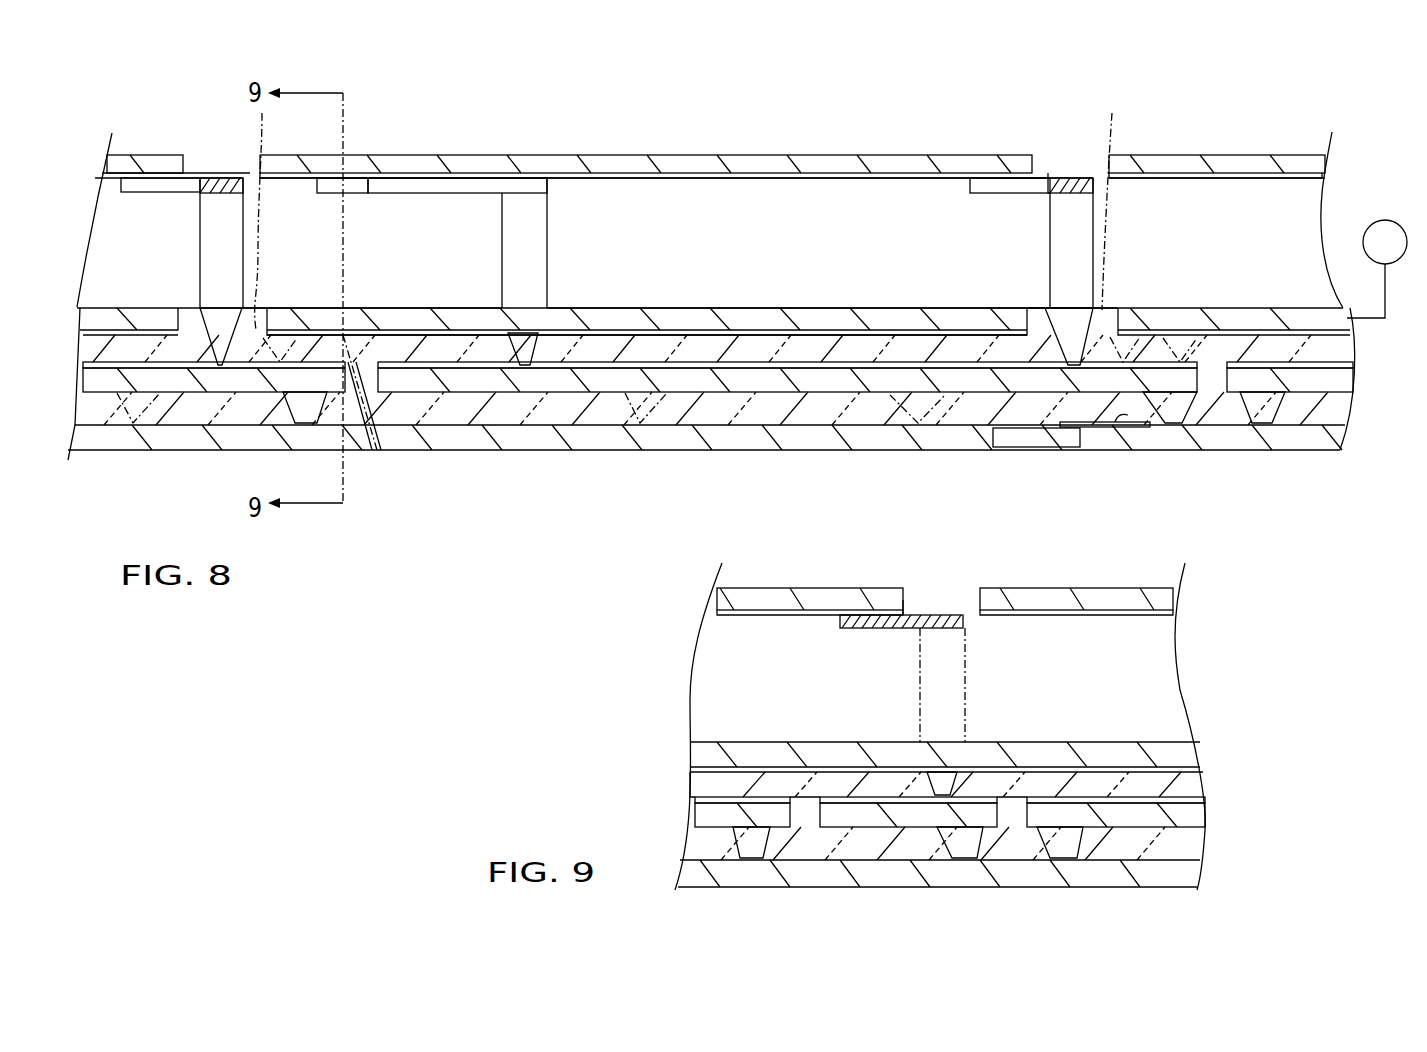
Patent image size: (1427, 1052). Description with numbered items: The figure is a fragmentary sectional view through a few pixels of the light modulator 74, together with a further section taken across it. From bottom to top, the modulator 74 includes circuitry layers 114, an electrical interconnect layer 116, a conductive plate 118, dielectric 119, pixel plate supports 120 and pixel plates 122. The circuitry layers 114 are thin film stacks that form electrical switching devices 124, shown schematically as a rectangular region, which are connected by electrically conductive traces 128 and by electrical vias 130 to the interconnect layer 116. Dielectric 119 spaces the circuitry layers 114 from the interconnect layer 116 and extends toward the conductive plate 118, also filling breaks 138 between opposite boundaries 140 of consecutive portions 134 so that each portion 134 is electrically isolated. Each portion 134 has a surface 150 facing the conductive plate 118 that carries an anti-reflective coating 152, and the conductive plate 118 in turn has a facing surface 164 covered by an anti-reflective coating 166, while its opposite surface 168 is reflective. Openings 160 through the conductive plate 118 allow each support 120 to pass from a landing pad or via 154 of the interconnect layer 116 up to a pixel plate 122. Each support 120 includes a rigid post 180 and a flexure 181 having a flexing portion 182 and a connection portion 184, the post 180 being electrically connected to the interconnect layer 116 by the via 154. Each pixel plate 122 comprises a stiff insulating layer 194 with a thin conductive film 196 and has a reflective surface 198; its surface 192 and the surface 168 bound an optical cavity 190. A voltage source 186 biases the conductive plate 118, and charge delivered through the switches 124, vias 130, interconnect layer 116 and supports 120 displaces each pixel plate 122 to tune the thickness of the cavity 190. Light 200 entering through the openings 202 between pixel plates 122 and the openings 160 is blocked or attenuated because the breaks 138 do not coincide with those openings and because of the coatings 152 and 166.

In FIG. 8, the light modulator 74 is at (106, 97).
In FIG. 9, the light modulator 74 is at (644, 634).
In FIG. 8, the circuitry layers 114 is at (1250, 450).
In FIG. 9, the circuitry layers 114 is at (1107, 888).
In FIG. 8, the electrical interconnect layer 116 is at (1357, 375).
In FIG. 9, the electrical interconnect layer 116 is at (1207, 812).
In FIG. 8, the conductive plate 118 is at (72, 307).
In FIG. 9, the conductive plate 118 is at (1203, 755).
In FIG. 8, the dielectric 119 is at (722, 350).
In FIG. 8, the pixel plate support 120 is at (195, 238).
In FIG. 9, the pixel plate support 120 is at (975, 681).
In FIG. 8, the pixel plate 122 is at (148, 150).
In FIG. 9, the pixel plate 122 is at (818, 588).
In FIG. 8, the electrical switching device 124 is at (987, 440).
In FIG. 8, the electrically conductive trace 128 is at (1123, 418).
In FIG. 8, the electrical via 130 is at (290, 403).
In FIG. 9, the electrical via 130 is at (1058, 847).
In FIG. 8, the portion 134 is at (108, 385).
In FIG. 8, the break 138 is at (367, 413).
In FIG. 8, the boundary 140 is at (352, 397).
In FIG. 8, the surface 150 is at (603, 368).
In FIG. 9, the surface 150 is at (705, 805).
In FIG. 8, the anti-reflective coating 152 is at (685, 360).
In FIG. 9, the anti-reflective coating 152 is at (705, 790).
In FIG. 8, the landing pad 154 is at (190, 308).
In FIG. 9, the landing pad 154 is at (930, 788).
In FIG. 8, the opening 160 is at (1040, 308).
In FIG. 8, the surface 164 is at (820, 333).
In FIG. 9, the surface 164 is at (705, 758).
In FIG. 8, the anti-reflective coating 166 is at (762, 345).
In FIG. 9, the anti-reflective coating 166 is at (785, 772).
In FIG. 8, the surface 168 is at (670, 308).
In FIG. 8, the post 180 is at (500, 262).
In FIG. 9, the post 180 is at (918, 690).
In FIG. 8, the flexure 181 is at (473, 168).
In FIG. 9, the flexure 181 is at (876, 635).
In FIG. 8, the flexing portion 182 is at (449, 195).
In FIG. 8, the connection portion 184 is at (358, 195).
In FIG. 8, the voltage source 186 is at (1385, 220).
In FIG. 8, the optical cavity 190 is at (908, 205).
In FIG. 8, the surface 192 is at (568, 190).
In FIG. 8, the stiff insulating layer 194 is at (772, 165).
In FIG. 8, the thin conductive film 196 is at (397, 173).
In FIG. 8, the reflective surface 198 is at (812, 170).
In FIG. 8, the light 200 is at (270, 137).
In FIG. 8, the opening 202 is at (183, 175).
In FIG. 9, the opening 202 is at (908, 600).